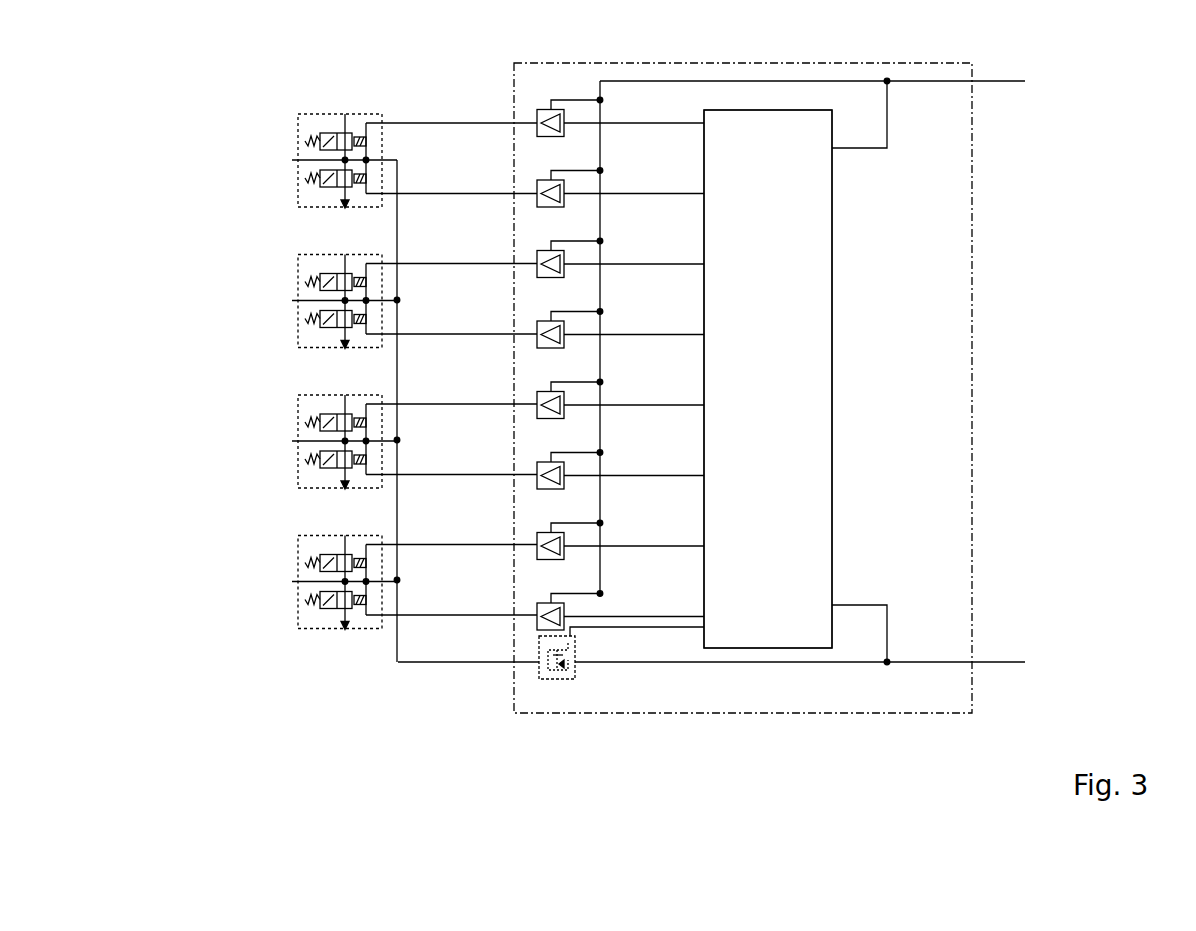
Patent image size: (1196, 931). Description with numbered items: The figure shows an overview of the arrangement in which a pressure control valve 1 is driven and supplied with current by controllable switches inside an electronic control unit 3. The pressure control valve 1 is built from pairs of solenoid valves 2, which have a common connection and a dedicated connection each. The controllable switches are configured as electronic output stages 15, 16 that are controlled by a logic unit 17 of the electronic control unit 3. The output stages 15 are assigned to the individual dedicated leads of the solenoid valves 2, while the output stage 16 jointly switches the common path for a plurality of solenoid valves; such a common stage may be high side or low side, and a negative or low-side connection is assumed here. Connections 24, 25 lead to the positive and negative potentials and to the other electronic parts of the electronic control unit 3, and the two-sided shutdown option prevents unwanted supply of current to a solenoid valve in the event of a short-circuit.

The pressure control valve 1 is at (277, 606).
The solenoid valves 2 is at (897, 379).
The electronic control unit 3 is at (978, 282).
The electronic output stages 15 is at (527, 606).
The electronic output stage 16 is at (572, 686).
The logic unit 17 is at (832, 383).
The connection 24 is at (896, 103).
The connection 25 is at (898, 630).